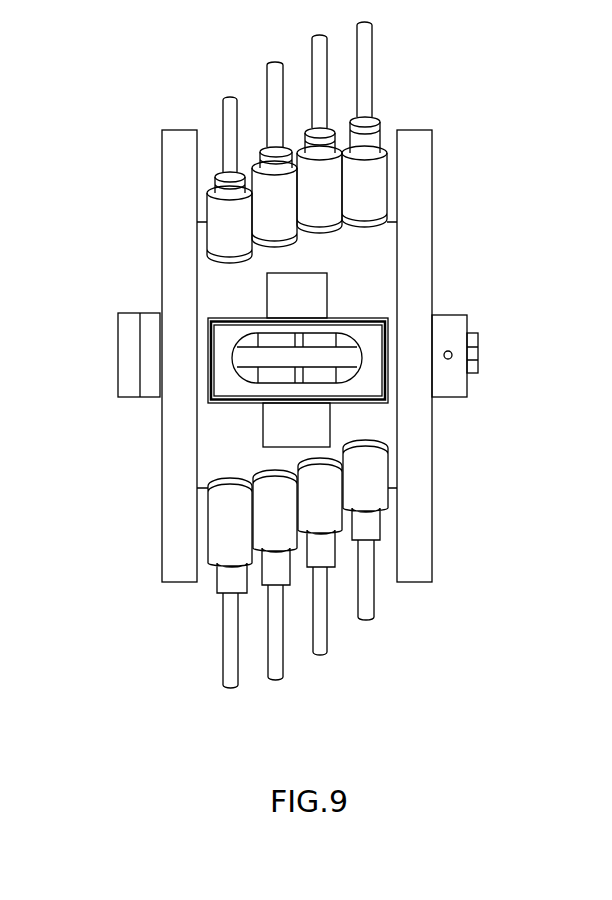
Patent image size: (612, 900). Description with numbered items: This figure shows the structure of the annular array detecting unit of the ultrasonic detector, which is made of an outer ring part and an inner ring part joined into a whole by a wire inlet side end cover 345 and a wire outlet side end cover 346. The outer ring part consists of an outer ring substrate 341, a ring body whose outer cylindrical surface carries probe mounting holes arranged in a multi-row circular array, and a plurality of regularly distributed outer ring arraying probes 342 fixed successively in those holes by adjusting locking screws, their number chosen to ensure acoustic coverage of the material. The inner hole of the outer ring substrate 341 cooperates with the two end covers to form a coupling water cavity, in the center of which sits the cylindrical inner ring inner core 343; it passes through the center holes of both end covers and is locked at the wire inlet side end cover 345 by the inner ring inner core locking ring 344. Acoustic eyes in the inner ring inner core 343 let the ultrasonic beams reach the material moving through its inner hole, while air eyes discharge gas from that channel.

The outer ring substrate 341 is at (222, 293).
The outer ring arraying probes 342 is at (310, 197).
The inner ring inner core 343 is at (333, 353).
The inner ring inner core locking ring 344 is at (448, 330).
The wire inlet side end cover 345 is at (415, 480).
The wire outlet side end cover 346 is at (183, 472).